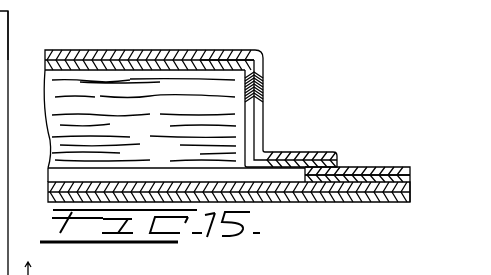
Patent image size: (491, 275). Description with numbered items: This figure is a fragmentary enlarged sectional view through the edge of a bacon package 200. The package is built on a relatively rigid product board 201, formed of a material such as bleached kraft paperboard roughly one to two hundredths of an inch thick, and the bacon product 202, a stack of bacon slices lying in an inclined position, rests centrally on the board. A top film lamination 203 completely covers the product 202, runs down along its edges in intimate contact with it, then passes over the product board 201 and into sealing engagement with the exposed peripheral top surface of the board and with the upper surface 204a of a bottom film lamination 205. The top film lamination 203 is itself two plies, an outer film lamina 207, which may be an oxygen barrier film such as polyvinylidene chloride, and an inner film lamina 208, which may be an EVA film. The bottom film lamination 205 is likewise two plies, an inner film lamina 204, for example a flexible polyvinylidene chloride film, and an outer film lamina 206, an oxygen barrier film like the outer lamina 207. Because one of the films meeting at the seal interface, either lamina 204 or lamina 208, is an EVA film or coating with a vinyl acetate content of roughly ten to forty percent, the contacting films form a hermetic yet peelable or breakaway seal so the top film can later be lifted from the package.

The package 200 is at (23, 50).
The product board 201 is at (47, 187).
The bacon product 202 is at (235, 129).
The top film lamination 203 is at (408, 169).
The inner film lamina 204 is at (48, 196).
The upper surface of bottom film lamination 204a is at (377, 177).
The bottom film lamination 205 is at (412, 187).
The outer film lamina 206 is at (287, 200).
The outer film lamina 207 is at (115, 54).
The inner film lamina 208 is at (217, 61).